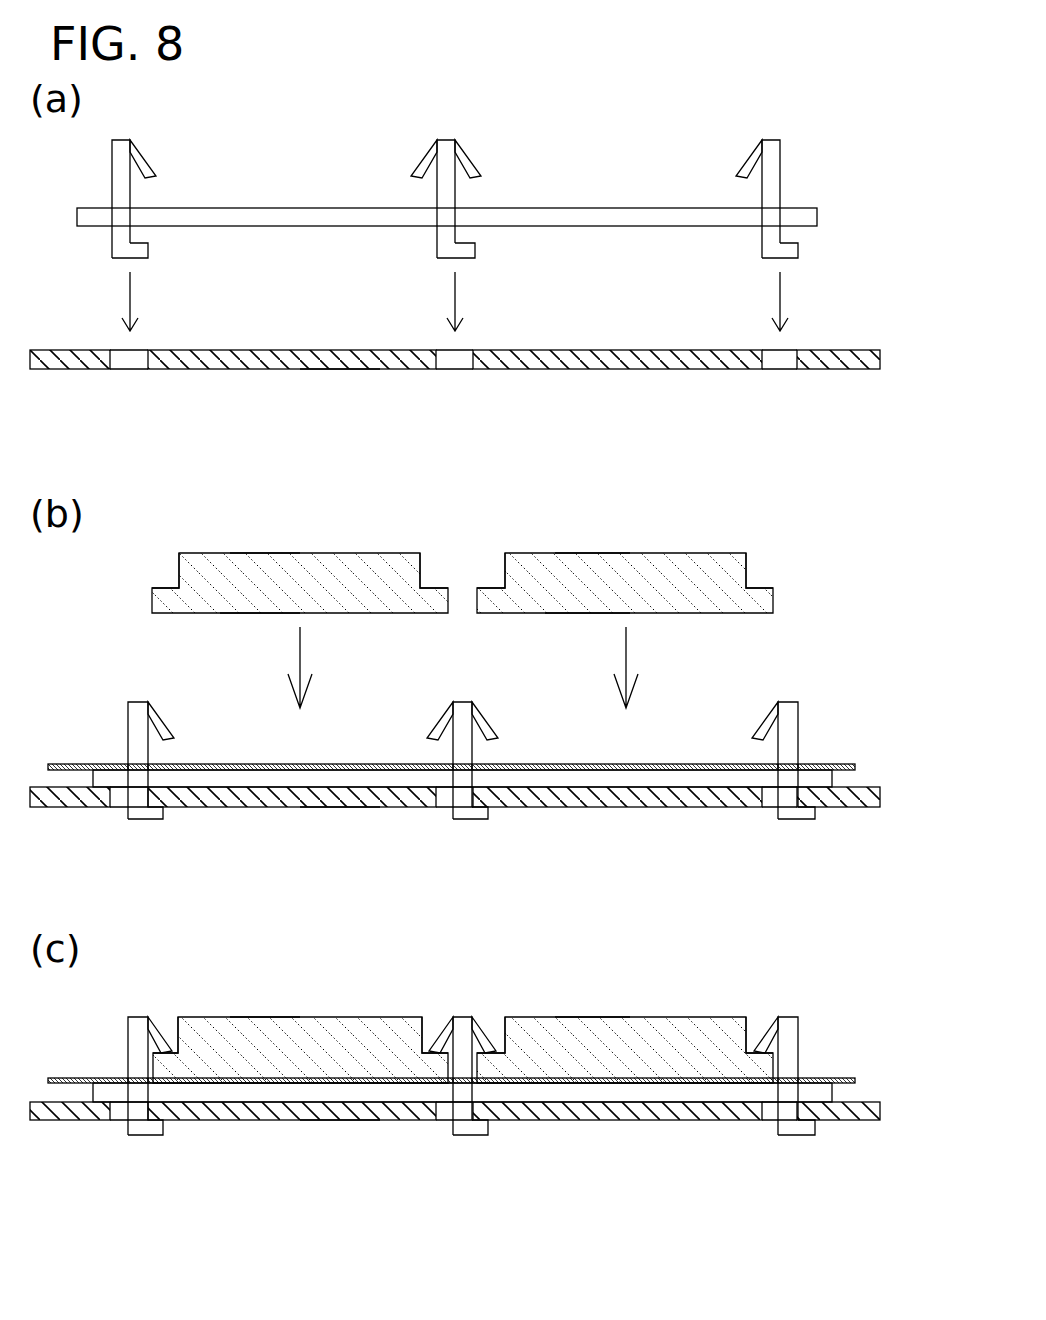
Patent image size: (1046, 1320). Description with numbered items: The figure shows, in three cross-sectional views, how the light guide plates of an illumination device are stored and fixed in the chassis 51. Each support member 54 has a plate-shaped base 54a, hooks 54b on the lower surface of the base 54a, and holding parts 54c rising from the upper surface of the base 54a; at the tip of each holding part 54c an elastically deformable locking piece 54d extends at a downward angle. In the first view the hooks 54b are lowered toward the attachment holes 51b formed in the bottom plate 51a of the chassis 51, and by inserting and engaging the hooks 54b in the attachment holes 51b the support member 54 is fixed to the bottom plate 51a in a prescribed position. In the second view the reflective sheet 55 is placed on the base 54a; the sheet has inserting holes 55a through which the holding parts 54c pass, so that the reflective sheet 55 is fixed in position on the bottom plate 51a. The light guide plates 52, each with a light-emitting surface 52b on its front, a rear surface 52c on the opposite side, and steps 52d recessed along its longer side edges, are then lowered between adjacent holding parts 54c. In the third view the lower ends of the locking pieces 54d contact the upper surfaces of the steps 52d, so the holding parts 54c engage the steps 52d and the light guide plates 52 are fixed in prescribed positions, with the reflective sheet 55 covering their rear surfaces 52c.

The chassis 51 is at (455, 783).
The bottom plate 51a is at (340, 782).
The attachment hole 51b is at (441, 768).
The light guide plate 52 is at (467, 781).
The light-emitting surface 52b is at (430, 756).
The rear surface 52c is at (425, 643).
The step 52d is at (467, 783).
The support member 54 is at (482, 645).
The base 54a is at (454, 665).
The hook 54b is at (500, 728).
The holding part 54c is at (460, 606).
The locking piece 54d is at (454, 576).
The reflective sheet 55 is at (461, 928).
The inserting hole 55a is at (501, 968).